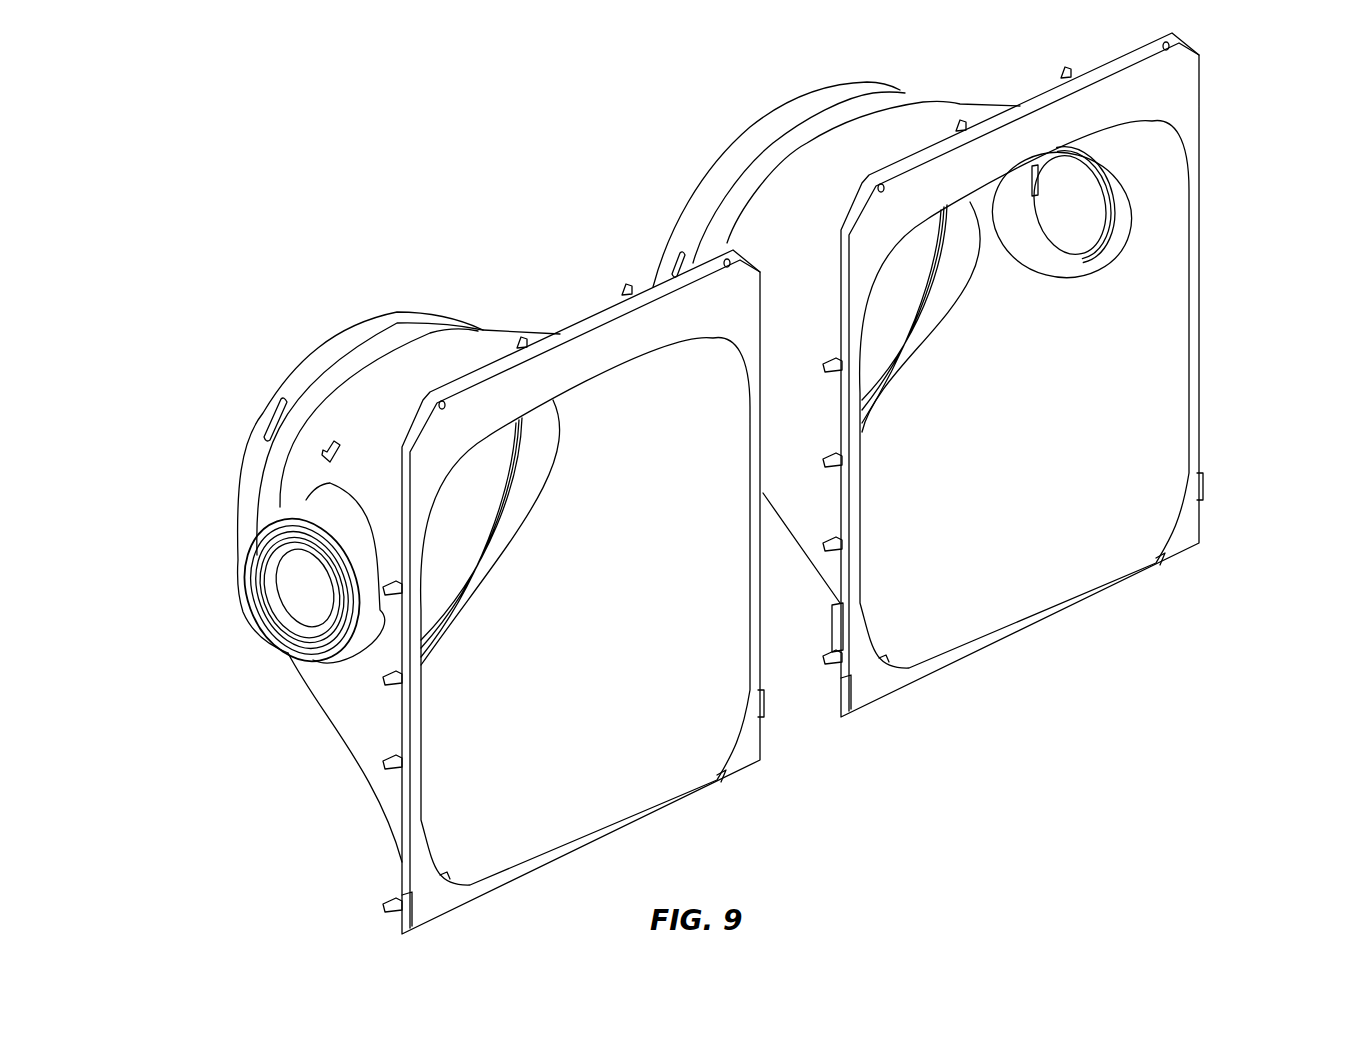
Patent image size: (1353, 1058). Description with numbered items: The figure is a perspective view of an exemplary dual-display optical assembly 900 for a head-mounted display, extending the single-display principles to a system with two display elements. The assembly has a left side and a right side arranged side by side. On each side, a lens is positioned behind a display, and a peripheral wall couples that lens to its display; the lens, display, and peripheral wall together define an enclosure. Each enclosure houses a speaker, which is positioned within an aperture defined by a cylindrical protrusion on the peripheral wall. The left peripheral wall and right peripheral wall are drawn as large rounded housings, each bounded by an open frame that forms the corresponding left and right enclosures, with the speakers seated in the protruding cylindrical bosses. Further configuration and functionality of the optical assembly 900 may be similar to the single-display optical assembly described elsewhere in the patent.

The dual-display optical assembly 900 is at (224, 103).